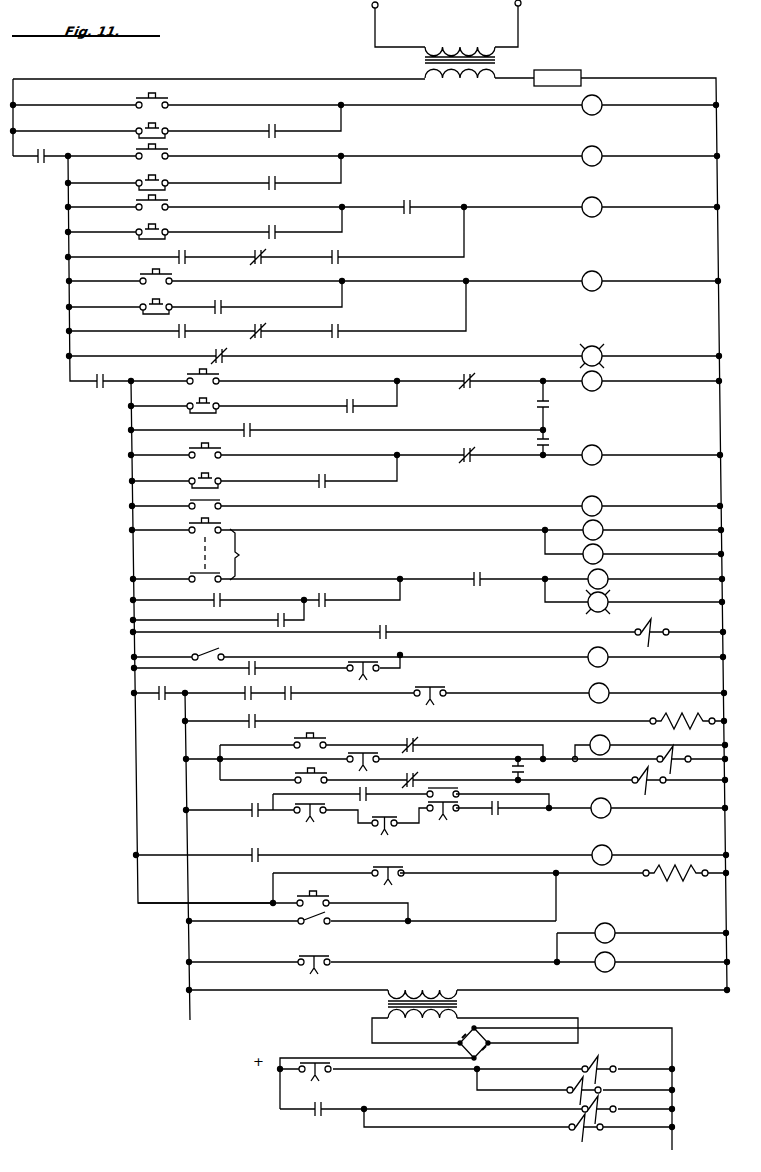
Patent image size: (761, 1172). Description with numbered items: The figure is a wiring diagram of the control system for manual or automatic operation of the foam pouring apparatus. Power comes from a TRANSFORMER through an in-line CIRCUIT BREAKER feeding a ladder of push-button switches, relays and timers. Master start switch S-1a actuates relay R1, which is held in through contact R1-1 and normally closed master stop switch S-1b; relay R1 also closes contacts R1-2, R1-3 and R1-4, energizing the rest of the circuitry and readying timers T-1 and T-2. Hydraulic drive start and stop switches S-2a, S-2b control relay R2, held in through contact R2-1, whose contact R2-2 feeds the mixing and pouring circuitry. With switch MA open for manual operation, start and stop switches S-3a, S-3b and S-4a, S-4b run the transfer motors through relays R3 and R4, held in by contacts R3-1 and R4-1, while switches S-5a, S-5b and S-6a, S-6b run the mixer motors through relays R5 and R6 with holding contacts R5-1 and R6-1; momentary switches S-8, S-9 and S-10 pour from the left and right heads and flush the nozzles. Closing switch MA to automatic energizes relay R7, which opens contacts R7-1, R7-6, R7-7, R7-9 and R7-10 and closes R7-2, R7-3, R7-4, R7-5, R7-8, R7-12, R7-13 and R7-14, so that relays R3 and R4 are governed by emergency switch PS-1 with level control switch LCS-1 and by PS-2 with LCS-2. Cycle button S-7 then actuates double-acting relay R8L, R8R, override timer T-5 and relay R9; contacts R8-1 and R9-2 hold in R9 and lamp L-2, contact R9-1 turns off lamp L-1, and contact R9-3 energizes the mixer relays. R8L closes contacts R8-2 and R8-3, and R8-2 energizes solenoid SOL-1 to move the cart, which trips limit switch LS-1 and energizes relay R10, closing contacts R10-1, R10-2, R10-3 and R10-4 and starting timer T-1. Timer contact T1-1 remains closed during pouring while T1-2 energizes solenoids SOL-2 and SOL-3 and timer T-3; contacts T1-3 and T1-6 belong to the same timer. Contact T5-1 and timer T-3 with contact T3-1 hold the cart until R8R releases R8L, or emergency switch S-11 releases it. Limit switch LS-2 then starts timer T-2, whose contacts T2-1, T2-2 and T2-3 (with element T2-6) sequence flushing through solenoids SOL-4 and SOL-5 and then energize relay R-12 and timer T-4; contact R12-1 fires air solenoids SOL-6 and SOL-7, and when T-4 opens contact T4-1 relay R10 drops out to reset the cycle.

The transformer TRANSFORMER is at (446, 39).
The in-line circuit breaker CIRCUIT BREAKER is at (591, 69).
The master start switch S-1a is at (170, 98).
The master stop switch S-1b is at (170, 126).
The relay R1 is at (604, 101).
The relay contact R1-1 is at (290, 125).
The relay contact R1-2 is at (37, 150).
The relay contact R1-3 is at (304, 687).
The relay contact R1-4 is at (235, 850).
The hydraulic drive motor start switch S-2a is at (170, 148).
The hydraulic drive motor stop switch S-2b is at (170, 177).
The relay R2 is at (604, 152).
The relay contact R2-1 is at (290, 177).
The relay contact R2-2 is at (97, 374).
The prepolymer transfer motor start switch S-3a is at (170, 199).
The prepolymer transfer motor stop switch S-3b is at (170, 226).
The relay R3 is at (604, 202).
The relay contact R3-1 is at (290, 226).
The relay contact R7-1 is at (423, 200).
The relay contact R7-2 is at (199, 251).
The relay contact R7-3 is at (162, 326).
The relay contact R7-4 is at (561, 405).
The relay contact R7-5 is at (561, 438).
The relay contact R7-6 is at (483, 449).
The relay contact R7-7 is at (483, 375).
The relay contact R7-8 is at (493, 573).
The relay contact R7-9 is at (426, 740).
The relay contact R7-10 is at (430, 774).
The relay contact R7-12 is at (540, 769).
The relay contact R7-13 is at (384, 797).
The relay contact R7-14 is at (515, 814).
The emergency switch PS-1 is at (274, 251).
The emergency switch PS-2 is at (274, 326).
The level control switch LCS-1 is at (356, 251).
The level control switch LCS-2 is at (356, 325).
The resin transfer motor start switch S-4a is at (132, 274).
The resin transfer motor stop switch S-4b is at (132, 302).
The relay R4 is at (604, 276).
The relay contact R4-1 is at (236, 301).
The relay contact R9-1 is at (203, 352).
The relay contact R9-2 is at (339, 594).
The relay contact R9-3 is at (264, 425).
The lamp L-1 is at (606, 352).
The lamp L-2 is at (610, 600).
The left mixer motor start switch S-5a is at (181, 374).
The left mixer motor stop switch S-5b is at (181, 401).
The relay R5 is at (604, 384).
The relay contact R5-1 is at (331, 400).
The right mixer motor start switch S-6a is at (182, 448).
The right mixer motor stop switch S-6b is at (182, 475).
The relay R6 is at (605, 450).
The relay contact R6-1 is at (339, 475).
The manual/automatic switch MA is at (217, 498).
The relay R7 is at (605, 501).
The cycle button switch S-7 is at (228, 550).
The left side of relay R8 R8L is at (610, 525).
The right side of relay R8 R8R is at (619, 803).
The relay contact R8-1 is at (200, 595).
The relay contact R8-2 is at (401, 626).
The relay contact R8-3 is at (235, 805).
The timer T5 T-5 is at (607, 550).
The relay R9 is at (609, 575).
The control relay R10 is at (614, 652).
The relay contact R10-1 is at (243, 687).
The relay contact R10-2 is at (162, 686).
The relay contact R10-3 is at (273, 716).
The relay contact R10-4 is at (258, 615).
The solenoid valve Sol-1 SOL-1 is at (666, 628).
The solenoid valve Sol-2 SOL-2 is at (685, 760).
The solenoid valve Sol-3 SOL-3 is at (632, 777).
The mix head solenoid valve Sol-4 SOL-4 is at (620, 1067).
The mix head solenoid valve Sol-5 SOL-5 is at (607, 1088).
The solenoid valve Sol-6 SOL-6 is at (620, 1107).
The solenoid valve Sol-7 SOL-7 is at (608, 1126).
The limit switch LS-1 is at (224, 649).
The limit switch LS-2 is at (330, 914).
The timer contact T4-1 is at (321, 673).
The timer contact T1-1 is at (445, 689).
The timer contact T1-2 is at (363, 765).
The timer contact T1-3 is at (443, 819).
The timer element T1-6 is at (682, 712).
The timer T1 T-1 is at (611, 688).
The timer T2 T-2 is at (617, 851).
The timer T3 T-3 is at (616, 740).
The delay timer T4 T-4 is at (619, 930).
The timer contact T2-1 is at (389, 869).
The timer contact T2-2 is at (325, 1075).
The timer contact T2-3 is at (331, 960).
The timer element T2-6 is at (675, 882).
The timer contact T3-1 is at (310, 820).
The timer contact T5-1 is at (386, 833).
The left pour momentary switch S-8 is at (324, 738).
The right pour momentary switch S-9 is at (296, 773).
The flushing and air blowing momentary switch S-10 is at (330, 896).
The emergency cart return switch S-11 is at (458, 787).
The control relay R12 R-12 is at (624, 959).
The relay contact R12-1 is at (338, 1104).